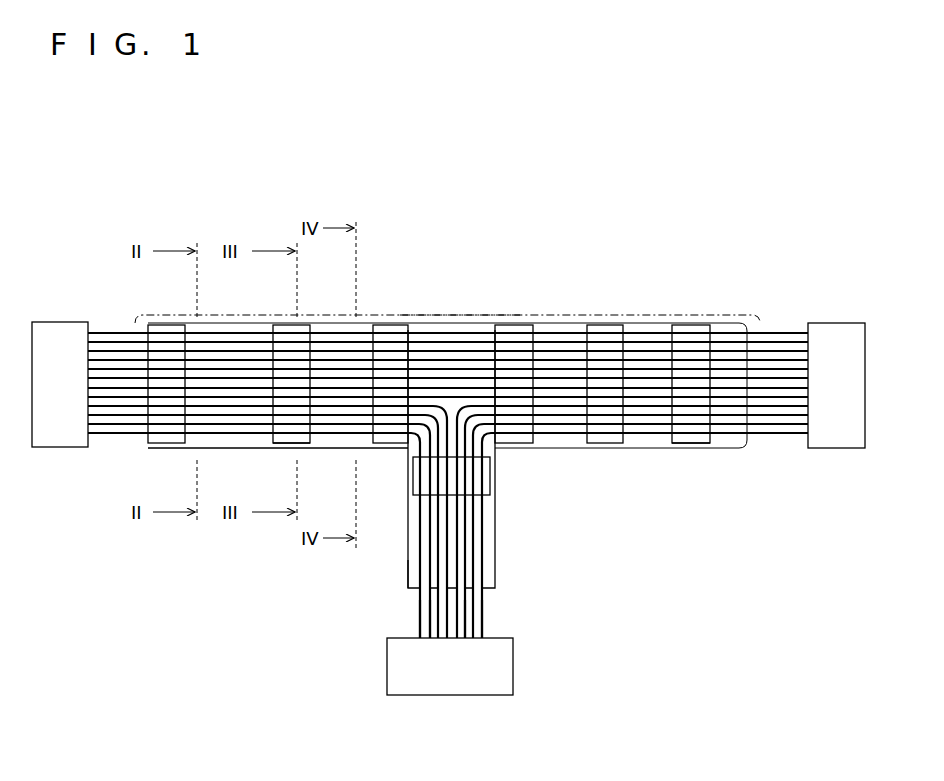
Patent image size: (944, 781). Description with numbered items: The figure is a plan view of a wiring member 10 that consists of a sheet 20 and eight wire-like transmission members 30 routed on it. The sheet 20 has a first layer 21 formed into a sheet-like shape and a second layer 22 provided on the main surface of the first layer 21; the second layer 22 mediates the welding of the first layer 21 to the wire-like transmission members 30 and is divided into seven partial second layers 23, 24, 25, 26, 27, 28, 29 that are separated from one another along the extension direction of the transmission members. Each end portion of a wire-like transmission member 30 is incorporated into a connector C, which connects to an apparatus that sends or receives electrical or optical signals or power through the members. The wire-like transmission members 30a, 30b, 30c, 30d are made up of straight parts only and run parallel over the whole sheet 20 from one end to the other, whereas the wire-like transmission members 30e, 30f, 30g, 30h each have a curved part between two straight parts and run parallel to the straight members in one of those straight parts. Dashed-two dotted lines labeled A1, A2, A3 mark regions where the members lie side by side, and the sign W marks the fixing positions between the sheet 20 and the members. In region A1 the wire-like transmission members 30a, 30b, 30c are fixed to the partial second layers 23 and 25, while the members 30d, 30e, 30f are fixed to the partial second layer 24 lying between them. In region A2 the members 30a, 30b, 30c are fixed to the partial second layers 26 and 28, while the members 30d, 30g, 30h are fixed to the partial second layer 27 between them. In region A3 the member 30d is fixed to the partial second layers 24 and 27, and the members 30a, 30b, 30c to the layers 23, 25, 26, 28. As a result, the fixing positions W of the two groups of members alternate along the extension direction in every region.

The wiring member 10 is at (128, 166).
The sheet 20 is at (404, 560).
The first layer 21 is at (495, 540).
The second layer 22 is at (310, 325).
The partial second layer 23 is at (215, 450).
The partial second layer 24 is at (282, 448).
The partial second layer 25 is at (375, 323).
The partial second layer 26 is at (503, 452).
The partial second layer 27 is at (593, 323).
The partial second layer 28 is at (673, 452).
The partial second layer 29 is at (490, 492).
The wire-like transmission member 30 is at (143, 338).
The wire-like transmission member 30a is at (143, 403).
The wire-like transmission member 30b is at (102, 333).
The wire-like transmission member 30c is at (778, 370).
The wire-like transmission member 30d is at (802, 392).
The wire-like transmission member 30e is at (430, 623).
The wire-like transmission member 30f is at (420, 598).
The wire-like transmission member 30g is at (465, 620).
The wire-like transmission member 30h is at (480, 598).
The region A1 is at (343, 448).
The region A2 is at (720, 450).
The region A3 is at (455, 315).
The fixing position W is at (393, 333).
The connector C is at (62, 448).